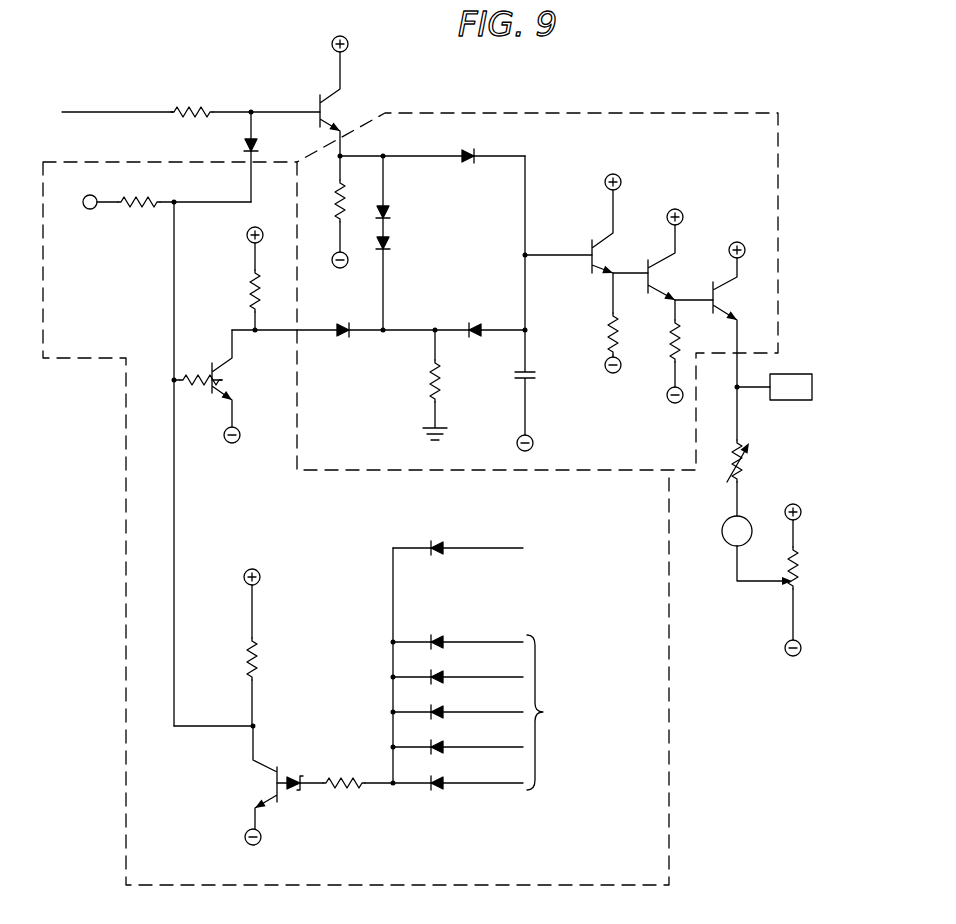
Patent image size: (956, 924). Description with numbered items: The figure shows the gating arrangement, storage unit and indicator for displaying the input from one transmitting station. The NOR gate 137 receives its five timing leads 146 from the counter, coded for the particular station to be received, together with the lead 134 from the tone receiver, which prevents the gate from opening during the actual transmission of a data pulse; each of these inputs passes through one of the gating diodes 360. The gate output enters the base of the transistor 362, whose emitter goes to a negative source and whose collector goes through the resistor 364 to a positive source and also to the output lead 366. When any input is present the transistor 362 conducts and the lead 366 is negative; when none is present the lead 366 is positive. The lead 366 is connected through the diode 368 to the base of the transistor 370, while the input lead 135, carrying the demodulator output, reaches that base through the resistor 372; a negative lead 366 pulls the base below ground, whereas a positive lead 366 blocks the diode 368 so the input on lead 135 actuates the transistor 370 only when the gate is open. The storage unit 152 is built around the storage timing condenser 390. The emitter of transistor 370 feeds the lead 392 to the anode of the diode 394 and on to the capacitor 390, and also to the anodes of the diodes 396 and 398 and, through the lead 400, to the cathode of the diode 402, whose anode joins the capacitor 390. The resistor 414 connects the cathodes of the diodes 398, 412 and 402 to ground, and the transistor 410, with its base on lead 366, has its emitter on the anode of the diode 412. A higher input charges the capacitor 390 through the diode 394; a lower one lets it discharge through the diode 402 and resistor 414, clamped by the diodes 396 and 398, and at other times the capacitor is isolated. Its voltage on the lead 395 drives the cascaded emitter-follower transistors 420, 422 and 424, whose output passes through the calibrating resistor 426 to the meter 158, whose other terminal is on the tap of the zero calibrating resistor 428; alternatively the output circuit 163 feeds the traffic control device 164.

The input lead 135 is at (78, 116).
The resistor 372 is at (196, 107).
The transistor 370 is at (320, 96).
The diode 368 is at (247, 147).
The lead 392 is at (365, 153).
The diode 394 is at (476, 163).
The lead 395 is at (549, 243).
The diode 396 is at (388, 215).
The diode 398 is at (388, 245).
The lead 400 is at (383, 287).
The diode 402 is at (478, 326).
The transistor 410 is at (222, 373).
The diode 412 is at (343, 338).
The resistor 414 is at (430, 387).
The storage timing condenser 390 is at (515, 375).
The transistor 420 is at (592, 240).
The transistor 422 is at (655, 272).
The transistor 424 is at (716, 297).
The storage unit 152 is at (782, 134).
The traffic control device 164 is at (800, 396).
The output circuit 163 is at (757, 393).
The calibrating resistor 426 is at (728, 468).
The meter 158 is at (750, 518).
The zero calibrating resistor 428 is at (790, 590).
The output lead 366 is at (175, 522).
The gating diodes 360 is at (443, 545).
The lead 134 is at (490, 545).
The timing leads 146 is at (538, 663).
The resistor 364 is at (260, 673).
The transistor 362 is at (262, 768).
The NOR gate 137 is at (672, 795).